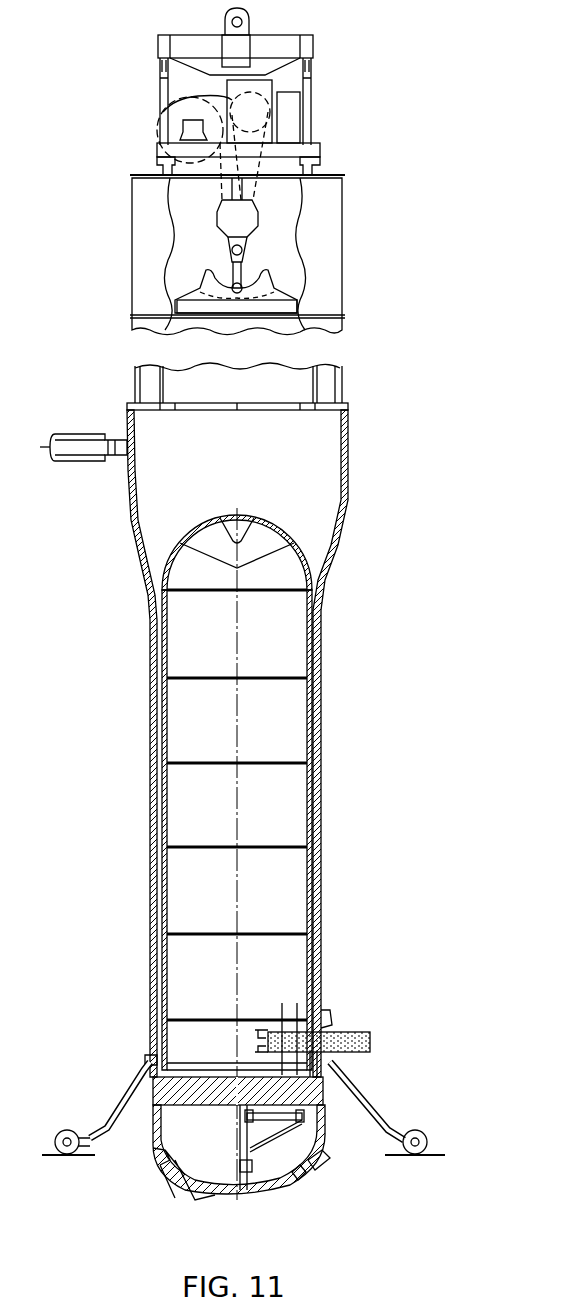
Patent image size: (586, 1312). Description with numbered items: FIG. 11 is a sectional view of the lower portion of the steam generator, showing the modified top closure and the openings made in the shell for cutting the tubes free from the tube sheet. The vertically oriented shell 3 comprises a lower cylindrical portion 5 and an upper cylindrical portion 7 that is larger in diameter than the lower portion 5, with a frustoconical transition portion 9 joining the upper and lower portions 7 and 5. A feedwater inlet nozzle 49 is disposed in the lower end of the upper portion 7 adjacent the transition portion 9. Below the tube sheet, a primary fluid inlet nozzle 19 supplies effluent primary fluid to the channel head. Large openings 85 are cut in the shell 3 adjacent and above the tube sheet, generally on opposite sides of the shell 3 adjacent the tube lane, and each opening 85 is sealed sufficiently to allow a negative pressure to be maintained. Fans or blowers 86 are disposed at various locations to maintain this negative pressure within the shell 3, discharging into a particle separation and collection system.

The shell 3 is at (322, 858).
The lower cylindrical portion 5 is at (320, 744).
The upper cylindrical portion 7 is at (345, 482).
The frustoconical transition portion 9 is at (322, 577).
The primary fluid inlet nozzle 19 is at (180, 1188).
The feedwater inlet nozzle 49 is at (76, 462).
The openings 85 is at (321, 1027).
The fans or blowers 86 is at (58, 1138).